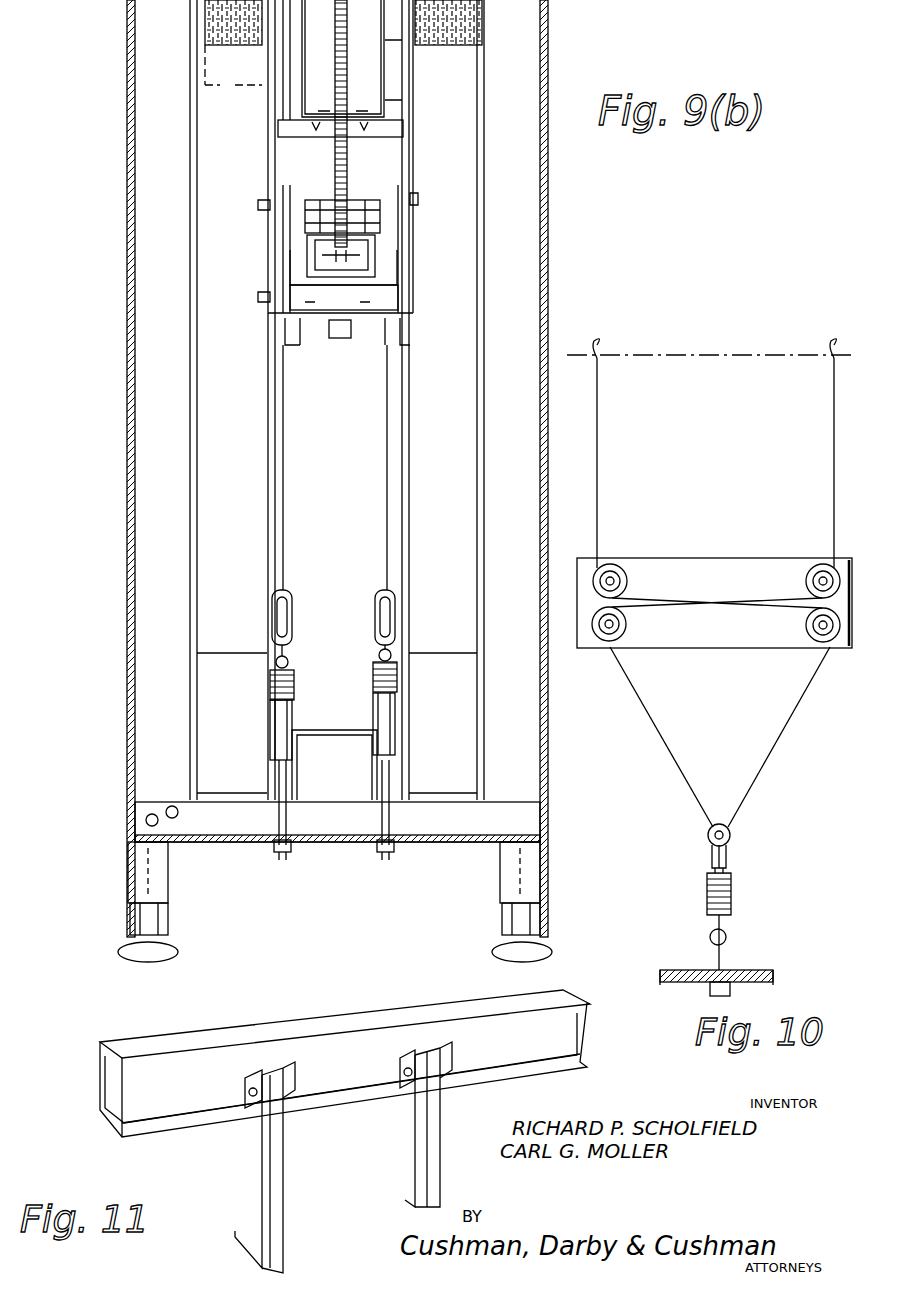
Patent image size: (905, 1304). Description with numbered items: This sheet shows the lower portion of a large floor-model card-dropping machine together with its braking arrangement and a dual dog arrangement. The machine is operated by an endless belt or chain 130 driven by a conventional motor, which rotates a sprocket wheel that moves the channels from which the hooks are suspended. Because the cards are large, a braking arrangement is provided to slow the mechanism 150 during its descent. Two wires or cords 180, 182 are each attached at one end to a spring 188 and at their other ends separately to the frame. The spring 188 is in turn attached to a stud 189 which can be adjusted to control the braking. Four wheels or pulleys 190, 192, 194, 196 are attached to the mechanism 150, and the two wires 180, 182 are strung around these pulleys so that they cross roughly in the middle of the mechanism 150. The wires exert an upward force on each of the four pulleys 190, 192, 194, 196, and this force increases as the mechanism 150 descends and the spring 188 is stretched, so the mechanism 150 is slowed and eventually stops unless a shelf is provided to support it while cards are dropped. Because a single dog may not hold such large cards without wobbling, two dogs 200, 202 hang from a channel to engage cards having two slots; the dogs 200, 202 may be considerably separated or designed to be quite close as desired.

In FIG. 9B, the endless belt or chain 130 is at (333, 72).
In FIG. 10, the mechanism 150 is at (738, 570).
In FIG. 9B, the wire or cord 180 is at (284, 473).
In FIG. 10, the wire or cord 180 is at (655, 735).
In FIG. 10, the wire or cord 182 is at (786, 726).
In FIG. 9B, the spring 188 is at (288, 707).
In FIG. 9B, the stud 189 is at (277, 822).
In FIG. 10, the stud 189 is at (730, 937).
In FIG. 10, the wheel or pulley 190 is at (806, 627).
In FIG. 10, the wheel or pulley 192 is at (806, 582).
In FIG. 10, the wheel or pulley 194 is at (624, 570).
In FIG. 10, the wheel or pulley 196 is at (622, 627).
In FIG. 11, the dog 200 is at (283, 1185).
In FIG. 11, the dog 202 is at (412, 1190).